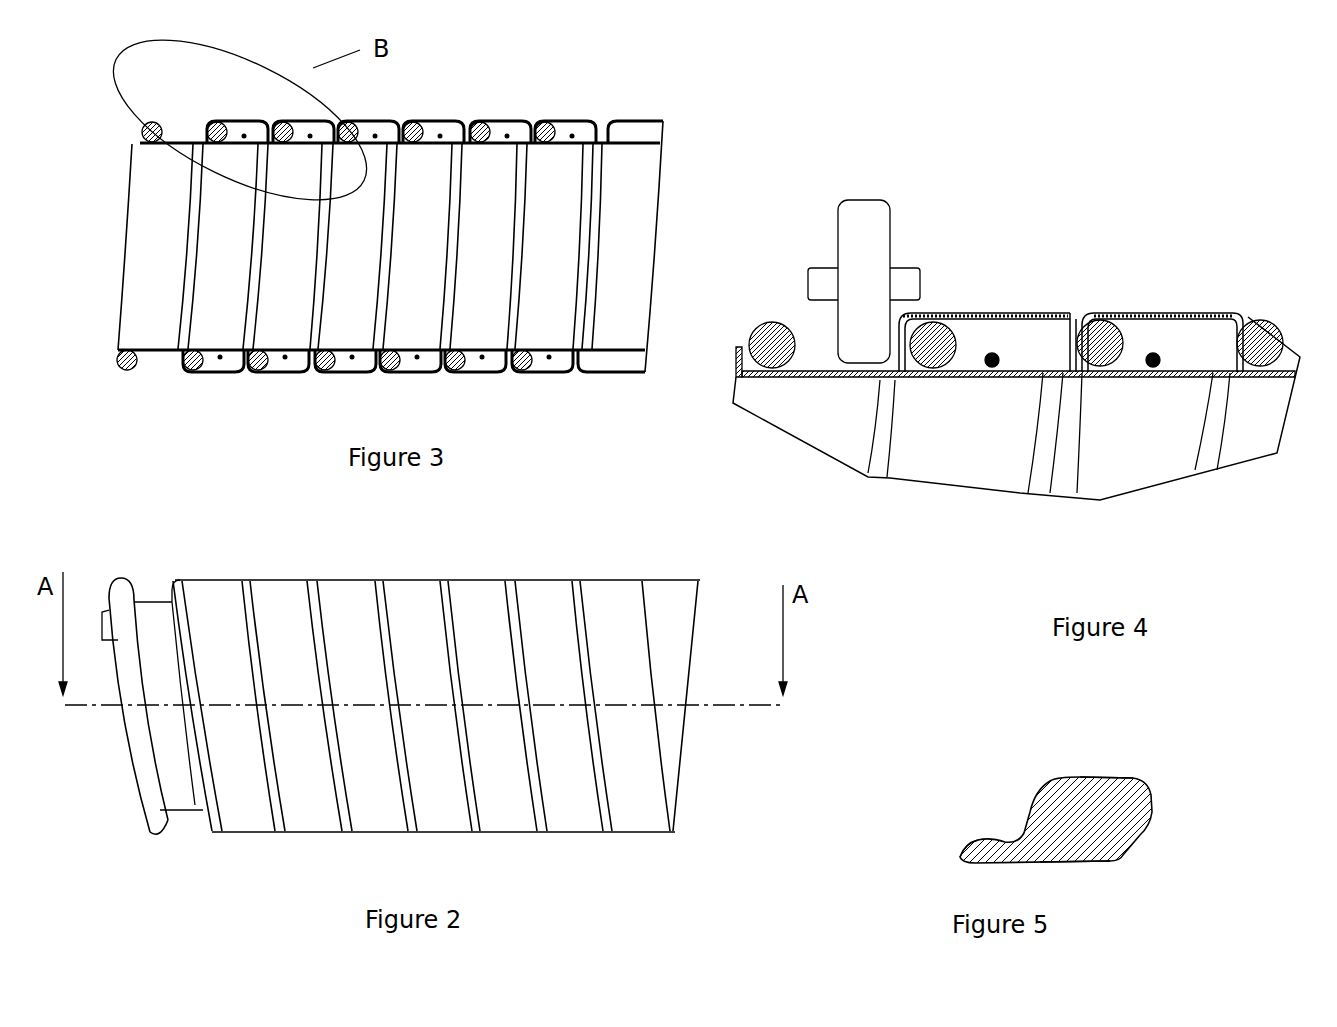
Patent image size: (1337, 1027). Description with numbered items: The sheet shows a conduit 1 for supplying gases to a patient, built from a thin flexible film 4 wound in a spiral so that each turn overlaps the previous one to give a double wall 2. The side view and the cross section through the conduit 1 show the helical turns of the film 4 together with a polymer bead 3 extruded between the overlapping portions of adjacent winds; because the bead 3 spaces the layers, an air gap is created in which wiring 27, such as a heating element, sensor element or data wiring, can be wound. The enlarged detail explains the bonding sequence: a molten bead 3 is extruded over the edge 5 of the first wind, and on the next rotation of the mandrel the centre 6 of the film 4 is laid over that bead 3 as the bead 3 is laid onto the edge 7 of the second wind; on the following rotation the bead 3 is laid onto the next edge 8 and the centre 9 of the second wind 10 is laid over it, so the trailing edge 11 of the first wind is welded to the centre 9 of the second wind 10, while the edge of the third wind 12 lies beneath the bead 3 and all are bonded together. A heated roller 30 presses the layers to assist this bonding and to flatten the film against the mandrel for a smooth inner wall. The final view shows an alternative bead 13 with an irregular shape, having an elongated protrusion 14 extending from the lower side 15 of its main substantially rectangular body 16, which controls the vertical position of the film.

In FIG. 3, the conduit 1 is at (198, 398).
In FIG. 2, the conduit 1 is at (545, 540).
In FIG. 3, the double wall 2 is at (550, 192).
In FIG. 4, the double wall 2 is at (1167, 450).
In FIG. 4, the bead 3 is at (737, 370).
In FIG. 3, the film 4 is at (148, 283).
In FIG. 4, the film 4 is at (992, 303).
In FIG. 2, the film 4 is at (212, 593).
In FIG. 3, the edge of the first wind 5 is at (175, 143).
In FIG. 4, the edge of the first wind 5 is at (788, 380).
In FIG. 4, the centre of the film 6 is at (900, 375).
In FIG. 4, the edge of the second wind 7 is at (920, 380).
In FIG. 4, the next edge of the film 8 is at (1079, 400).
In FIG. 4, the centre of the second wind 9 is at (1078, 333).
In FIG. 4, the second wind 10 is at (1203, 313).
In FIG. 4, the trailing edge of the first wind 11 is at (1072, 317).
In FIG. 4, the third wind 12 is at (1180, 380).
In FIG. 5, the bead 13 is at (963, 768).
In FIG. 5, the elongated protrusion 14 is at (958, 857).
In FIG. 5, the lower side 15 is at (1077, 857).
In FIG. 5, the main substantially rectangular body 16 is at (1103, 777).
In FIG. 3, the wiring 27 is at (567, 128).
In FIG. 4, the wiring 27 is at (990, 350).
In FIG. 4, the heated roller 30 is at (866, 200).